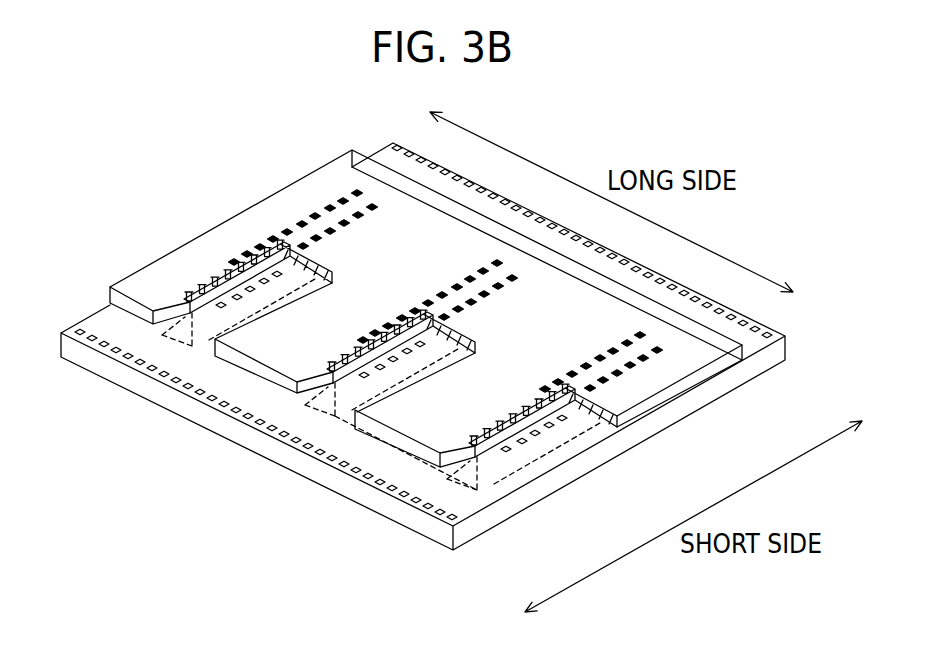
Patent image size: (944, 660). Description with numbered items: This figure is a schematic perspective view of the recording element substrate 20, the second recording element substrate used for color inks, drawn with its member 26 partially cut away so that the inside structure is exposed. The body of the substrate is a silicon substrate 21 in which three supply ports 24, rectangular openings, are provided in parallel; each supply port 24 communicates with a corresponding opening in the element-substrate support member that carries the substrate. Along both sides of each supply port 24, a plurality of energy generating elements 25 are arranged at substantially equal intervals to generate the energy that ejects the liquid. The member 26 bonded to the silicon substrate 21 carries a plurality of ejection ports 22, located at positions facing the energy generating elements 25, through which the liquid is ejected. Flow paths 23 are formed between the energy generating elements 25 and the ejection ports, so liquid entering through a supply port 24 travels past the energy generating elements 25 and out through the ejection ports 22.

The recording element substrate 20 is at (270, 157).
The silicon substrate 21 is at (728, 386).
The ejection ports 22 is at (240, 263).
The flow paths 23 is at (547, 418).
The supply ports 24 is at (193, 345).
The energy generating elements 25 is at (183, 313).
The member 26 is at (330, 187).